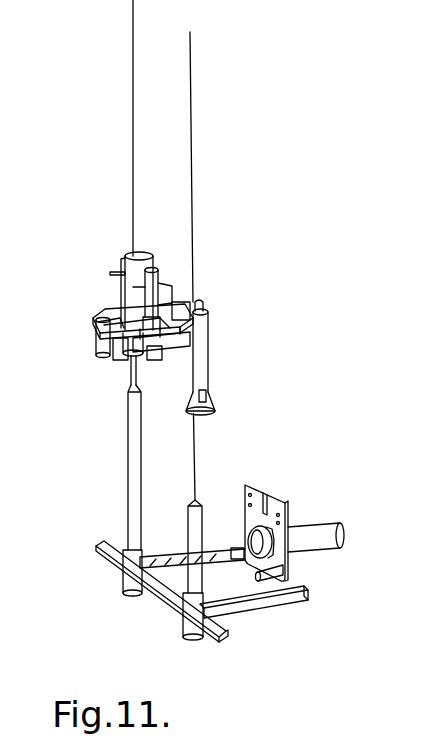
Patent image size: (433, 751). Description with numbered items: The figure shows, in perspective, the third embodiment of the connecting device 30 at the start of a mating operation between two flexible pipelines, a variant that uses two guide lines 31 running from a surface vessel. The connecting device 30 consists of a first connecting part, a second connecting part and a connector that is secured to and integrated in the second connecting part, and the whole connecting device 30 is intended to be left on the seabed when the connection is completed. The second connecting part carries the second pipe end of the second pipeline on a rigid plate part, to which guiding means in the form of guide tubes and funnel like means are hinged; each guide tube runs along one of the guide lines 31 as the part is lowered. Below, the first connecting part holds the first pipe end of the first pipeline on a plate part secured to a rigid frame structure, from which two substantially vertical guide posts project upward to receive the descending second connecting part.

The connecting device 30 is at (302, 222).
The guide line 31 is at (133, 165).